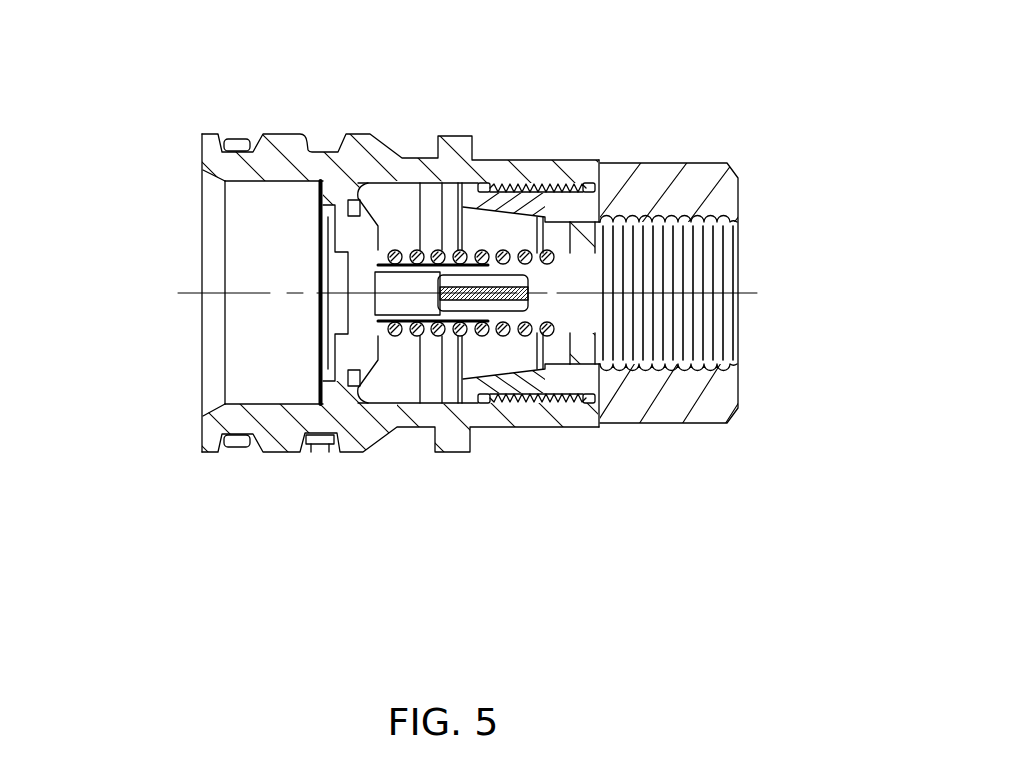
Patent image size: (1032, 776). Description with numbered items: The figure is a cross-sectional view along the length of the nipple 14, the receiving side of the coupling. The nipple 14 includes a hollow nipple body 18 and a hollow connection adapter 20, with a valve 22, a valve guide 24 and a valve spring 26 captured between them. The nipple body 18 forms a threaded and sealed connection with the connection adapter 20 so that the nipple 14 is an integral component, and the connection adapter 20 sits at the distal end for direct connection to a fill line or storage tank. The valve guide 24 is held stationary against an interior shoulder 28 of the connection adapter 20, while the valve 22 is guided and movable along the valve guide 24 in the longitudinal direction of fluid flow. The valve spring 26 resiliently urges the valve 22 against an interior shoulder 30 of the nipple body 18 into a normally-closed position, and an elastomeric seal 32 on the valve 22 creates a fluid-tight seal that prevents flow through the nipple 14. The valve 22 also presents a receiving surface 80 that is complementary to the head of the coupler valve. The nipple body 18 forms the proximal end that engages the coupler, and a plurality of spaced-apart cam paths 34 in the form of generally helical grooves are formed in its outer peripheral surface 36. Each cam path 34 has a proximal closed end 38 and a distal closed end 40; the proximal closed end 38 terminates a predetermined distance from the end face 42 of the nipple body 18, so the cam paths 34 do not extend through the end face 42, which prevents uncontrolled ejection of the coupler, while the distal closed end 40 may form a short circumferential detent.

The nipple 14 is at (728, 163).
The nipple body 18 is at (370, 135).
The connection adapter 20 is at (723, 402).
The valve 22 is at (367, 235).
The valve guide 24 is at (563, 253).
The valve spring 26 is at (507, 253).
The interior shoulder 28 is at (565, 350).
The interior shoulder 30 is at (347, 357).
The elastomeric seal 32 is at (350, 205).
The cam path 34 is at (240, 452).
The outer peripheral surface 36 is at (273, 452).
The proximal closed end 38 is at (242, 147).
The distal closed end 40 is at (320, 453).
The end face 42 is at (197, 438).
The receiving surface 80 is at (318, 277).